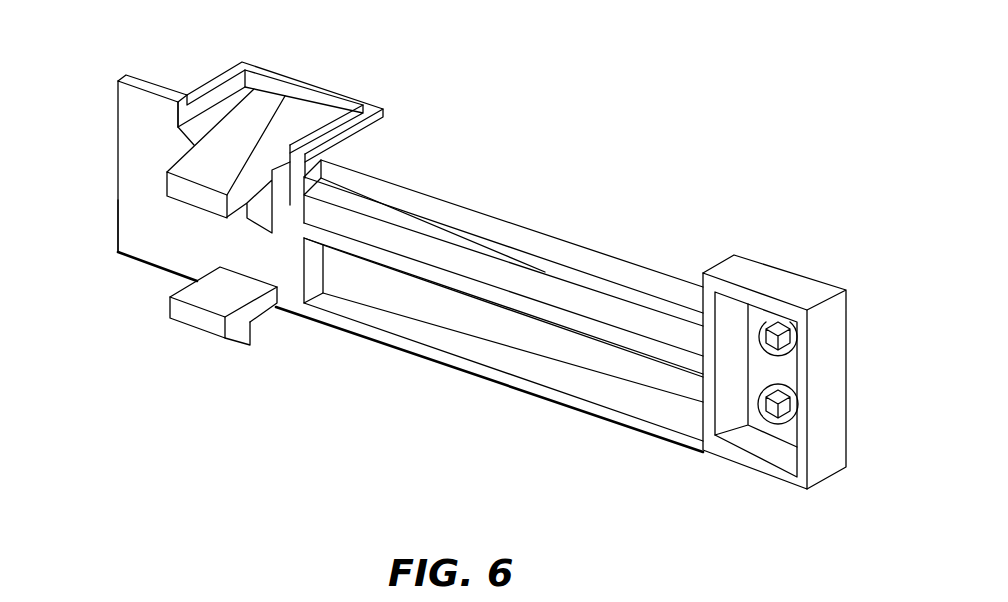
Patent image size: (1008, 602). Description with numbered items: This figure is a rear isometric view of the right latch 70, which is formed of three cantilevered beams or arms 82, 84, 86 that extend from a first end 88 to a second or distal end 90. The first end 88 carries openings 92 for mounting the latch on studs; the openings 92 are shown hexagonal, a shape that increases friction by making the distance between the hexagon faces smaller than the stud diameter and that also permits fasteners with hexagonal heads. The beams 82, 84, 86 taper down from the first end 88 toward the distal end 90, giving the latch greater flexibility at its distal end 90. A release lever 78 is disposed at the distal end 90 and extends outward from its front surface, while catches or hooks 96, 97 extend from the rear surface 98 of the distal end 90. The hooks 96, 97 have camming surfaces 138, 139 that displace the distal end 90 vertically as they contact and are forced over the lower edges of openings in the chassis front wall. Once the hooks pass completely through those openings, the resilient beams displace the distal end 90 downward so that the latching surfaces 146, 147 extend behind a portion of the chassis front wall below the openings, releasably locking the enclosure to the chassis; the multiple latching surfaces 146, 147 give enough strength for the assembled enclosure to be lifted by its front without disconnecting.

The right latch 70 is at (608, 254).
The release lever 78 is at (347, 95).
The cantilevered beam 82 is at (432, 200).
The cantilevered beam 84 is at (357, 257).
The cantilevered beam 86 is at (452, 366).
The first end 88 is at (847, 296).
The distal end 90 is at (118, 100).
The openings 92 is at (776, 340).
The hook 96 is at (167, 183).
The hook 97 is at (170, 305).
The rear surface 98 is at (198, 255).
The camming surface 138 is at (183, 205).
The camming surface 139 is at (240, 345).
The latching surface 146 is at (248, 213).
The latching surface 147 is at (252, 333).